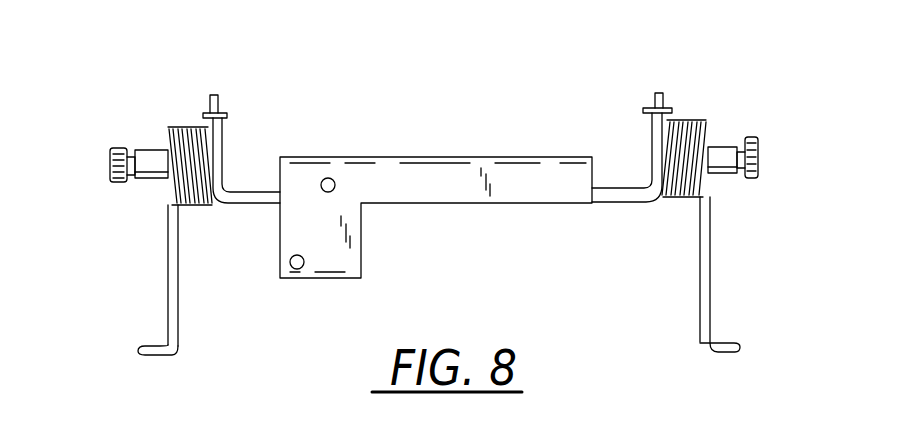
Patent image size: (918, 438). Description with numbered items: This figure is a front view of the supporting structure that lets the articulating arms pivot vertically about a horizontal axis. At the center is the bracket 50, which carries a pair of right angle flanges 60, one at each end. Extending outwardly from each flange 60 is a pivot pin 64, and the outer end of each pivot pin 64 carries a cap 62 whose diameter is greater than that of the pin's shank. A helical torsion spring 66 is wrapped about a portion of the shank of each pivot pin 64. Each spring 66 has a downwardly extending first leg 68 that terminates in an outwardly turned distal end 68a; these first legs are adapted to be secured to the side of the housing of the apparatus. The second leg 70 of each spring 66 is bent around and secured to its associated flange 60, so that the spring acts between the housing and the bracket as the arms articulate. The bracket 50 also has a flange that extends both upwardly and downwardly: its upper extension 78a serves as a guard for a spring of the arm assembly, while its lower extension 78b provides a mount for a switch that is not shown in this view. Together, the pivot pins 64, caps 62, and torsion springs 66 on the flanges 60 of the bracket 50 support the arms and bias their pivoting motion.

The bracket 50 is at (510, 204).
The right angle flange 60 is at (214, 95).
The cap 62 is at (120, 185).
The pivot pin 64 is at (150, 151).
The helical torsion spring 66 is at (197, 127).
The first leg 68 is at (180, 318).
The outwardly turned distal end 68a is at (153, 347).
The second leg 70 is at (227, 114).
The upper extension 78a is at (413, 157).
The lower extension 78b is at (348, 278).